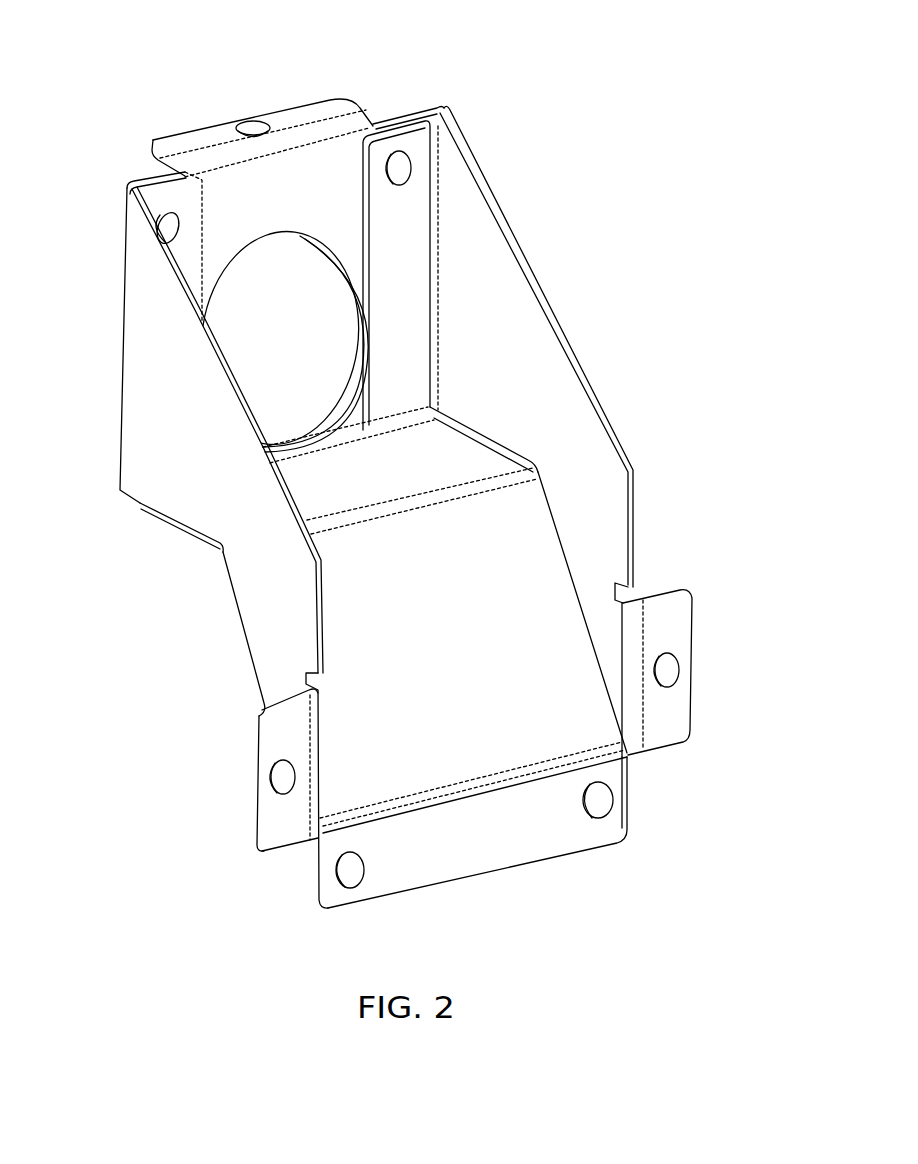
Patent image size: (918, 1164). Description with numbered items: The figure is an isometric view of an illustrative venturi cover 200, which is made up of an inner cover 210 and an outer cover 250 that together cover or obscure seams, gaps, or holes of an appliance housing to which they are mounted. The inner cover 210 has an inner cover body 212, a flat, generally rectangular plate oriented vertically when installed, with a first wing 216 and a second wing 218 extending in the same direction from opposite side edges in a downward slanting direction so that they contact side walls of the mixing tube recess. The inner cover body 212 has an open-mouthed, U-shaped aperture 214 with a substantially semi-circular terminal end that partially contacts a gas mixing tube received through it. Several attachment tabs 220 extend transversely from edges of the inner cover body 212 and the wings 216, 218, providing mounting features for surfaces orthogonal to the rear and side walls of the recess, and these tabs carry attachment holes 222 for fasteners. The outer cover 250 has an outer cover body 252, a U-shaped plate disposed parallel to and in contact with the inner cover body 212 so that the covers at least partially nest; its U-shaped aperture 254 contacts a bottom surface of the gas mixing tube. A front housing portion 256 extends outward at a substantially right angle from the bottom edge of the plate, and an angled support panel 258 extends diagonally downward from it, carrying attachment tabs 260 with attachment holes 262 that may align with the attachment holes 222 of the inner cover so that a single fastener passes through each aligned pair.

The venturi cover 200 is at (500, 76).
The inner cover 210 is at (122, 440).
The inner cover body 212 is at (333, 150).
The aperture 214 is at (333, 247).
The first wing 216 is at (168, 493).
The second wing 218 is at (530, 327).
The attachment tabs 220 is at (307, 110).
The attachment holes 222 is at (253, 123).
The outer cover 250 is at (517, 860).
The outer cover body 252 is at (418, 277).
The aperture 254 is at (357, 367).
The front housing portion 256 is at (477, 450).
The angled support panel 258 is at (553, 580).
The attachment tabs 260 is at (615, 778).
The attachment holes 262 is at (413, 160).